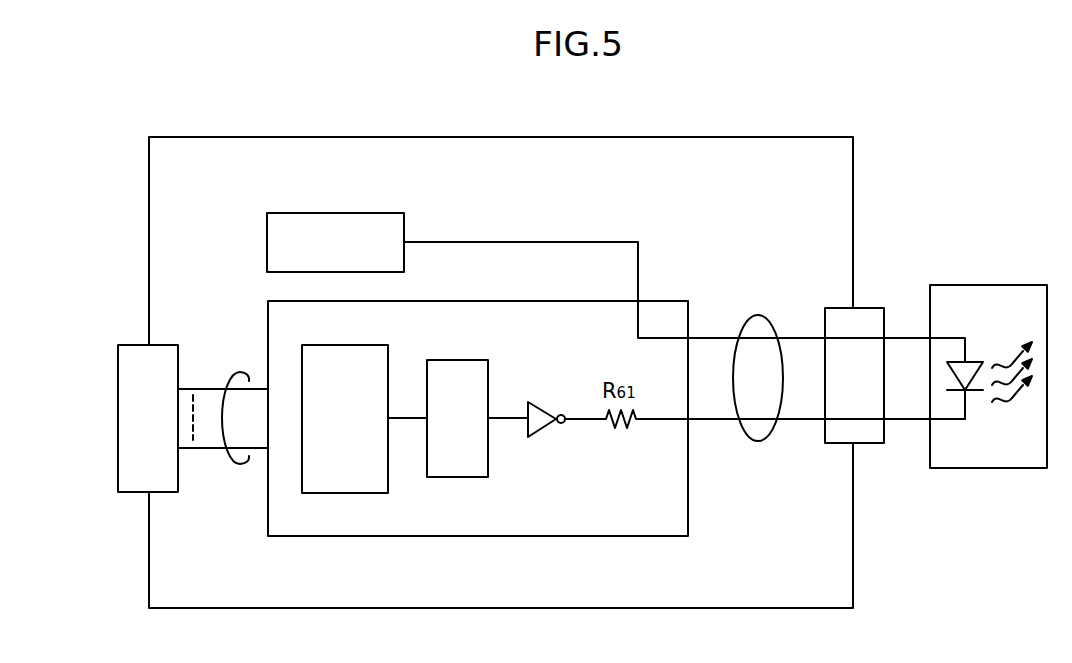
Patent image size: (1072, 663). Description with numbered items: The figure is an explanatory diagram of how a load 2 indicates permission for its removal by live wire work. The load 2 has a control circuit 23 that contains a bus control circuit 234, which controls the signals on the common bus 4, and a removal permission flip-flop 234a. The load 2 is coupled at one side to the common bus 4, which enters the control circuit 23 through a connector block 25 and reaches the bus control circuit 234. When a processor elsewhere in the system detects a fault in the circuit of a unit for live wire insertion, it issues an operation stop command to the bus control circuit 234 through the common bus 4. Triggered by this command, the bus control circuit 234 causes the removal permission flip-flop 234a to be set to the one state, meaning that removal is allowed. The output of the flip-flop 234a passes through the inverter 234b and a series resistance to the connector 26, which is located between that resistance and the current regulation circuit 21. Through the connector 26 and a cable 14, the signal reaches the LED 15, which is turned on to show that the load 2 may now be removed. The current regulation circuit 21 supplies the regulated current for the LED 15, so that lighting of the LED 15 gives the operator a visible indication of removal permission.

The load 2 is at (816, 137).
The current regulation circuit 21 is at (267, 232).
The control circuit 23 is at (268, 322).
The bus control circuit 234 is at (389, 358).
The removal permission flip-flop 234a is at (489, 378).
The inverter 234b is at (549, 434).
The connector terminal 25 is at (118, 385).
The common bus 4 is at (227, 457).
The cable 14 is at (752, 442).
The connector 26 is at (881, 308).
The LED 15 is at (1015, 285).